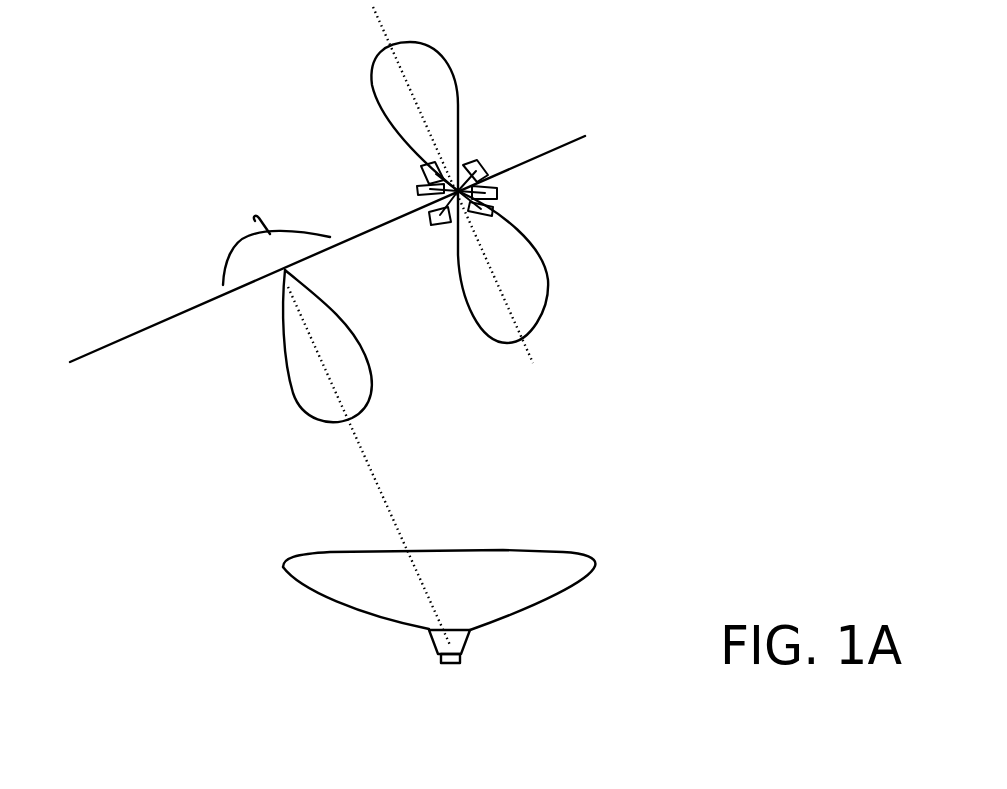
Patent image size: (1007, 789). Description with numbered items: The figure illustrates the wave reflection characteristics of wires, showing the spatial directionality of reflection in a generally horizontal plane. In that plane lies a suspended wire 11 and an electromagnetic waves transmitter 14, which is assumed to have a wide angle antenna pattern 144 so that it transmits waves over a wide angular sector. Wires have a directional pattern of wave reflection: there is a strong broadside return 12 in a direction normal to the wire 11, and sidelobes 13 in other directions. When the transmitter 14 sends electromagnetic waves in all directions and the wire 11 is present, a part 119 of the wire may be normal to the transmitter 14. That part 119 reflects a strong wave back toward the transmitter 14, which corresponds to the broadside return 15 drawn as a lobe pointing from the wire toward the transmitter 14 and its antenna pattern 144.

The suspended wire 11 is at (102, 347).
The part of the wire 119 is at (244, 248).
The broadside return 12 is at (443, 70).
The sidelobes 13 is at (458, 191).
The broadside return 15 is at (303, 357).
The wide angle antenna pattern 144 is at (350, 582).
The electromagnetic waves transmitter 14 is at (443, 637).